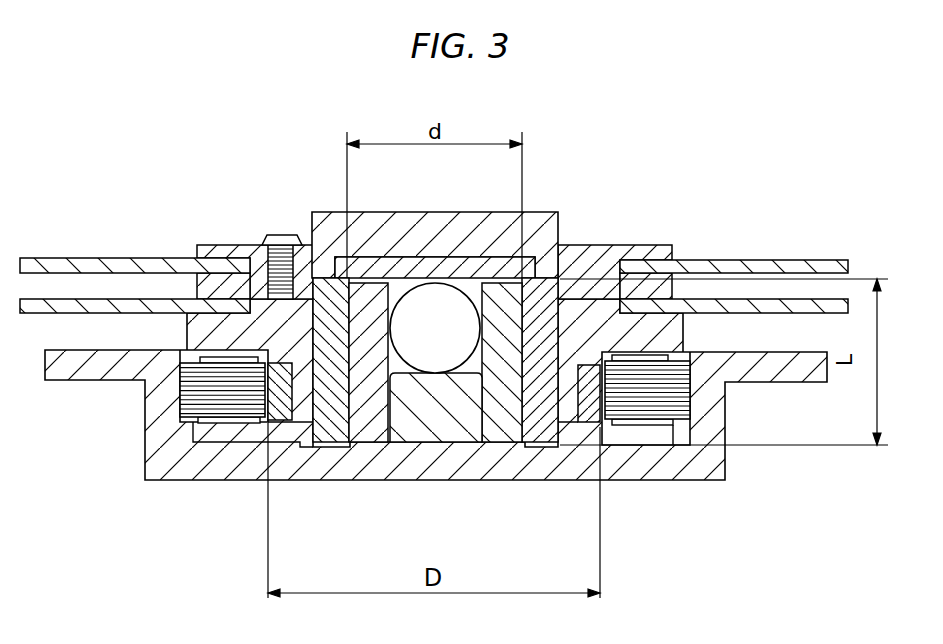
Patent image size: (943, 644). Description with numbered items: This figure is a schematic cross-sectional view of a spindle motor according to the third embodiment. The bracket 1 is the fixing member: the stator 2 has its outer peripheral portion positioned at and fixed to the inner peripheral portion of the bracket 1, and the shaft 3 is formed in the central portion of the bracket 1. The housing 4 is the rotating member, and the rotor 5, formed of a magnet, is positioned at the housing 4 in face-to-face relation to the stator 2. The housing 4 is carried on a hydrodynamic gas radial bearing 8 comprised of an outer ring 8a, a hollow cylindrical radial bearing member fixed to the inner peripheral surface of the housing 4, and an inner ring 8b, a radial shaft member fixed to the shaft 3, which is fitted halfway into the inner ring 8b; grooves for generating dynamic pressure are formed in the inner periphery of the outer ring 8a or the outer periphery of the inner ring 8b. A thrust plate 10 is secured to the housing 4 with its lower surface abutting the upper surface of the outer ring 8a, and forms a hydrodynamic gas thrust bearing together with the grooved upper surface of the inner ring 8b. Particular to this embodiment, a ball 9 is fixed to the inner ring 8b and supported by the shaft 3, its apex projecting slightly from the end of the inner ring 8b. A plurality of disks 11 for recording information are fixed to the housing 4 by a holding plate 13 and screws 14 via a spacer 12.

The bracket 1 is at (717, 465).
The stator 2 is at (213, 403).
The shaft 3 is at (427, 428).
The housing 4 is at (495, 223).
The rotor 5 is at (283, 410).
The hydrodynamic gas radial bearing 8 is at (435, 420).
The outer ring 8a is at (332, 433).
The inner ring 8b is at (368, 428).
The ball 9 is at (435, 295).
The thrust plate 10 is at (378, 267).
The disks 11 is at (777, 265).
The spacer 12 is at (678, 290).
The holding plate 13 is at (594, 247).
The screws 14 is at (277, 237).